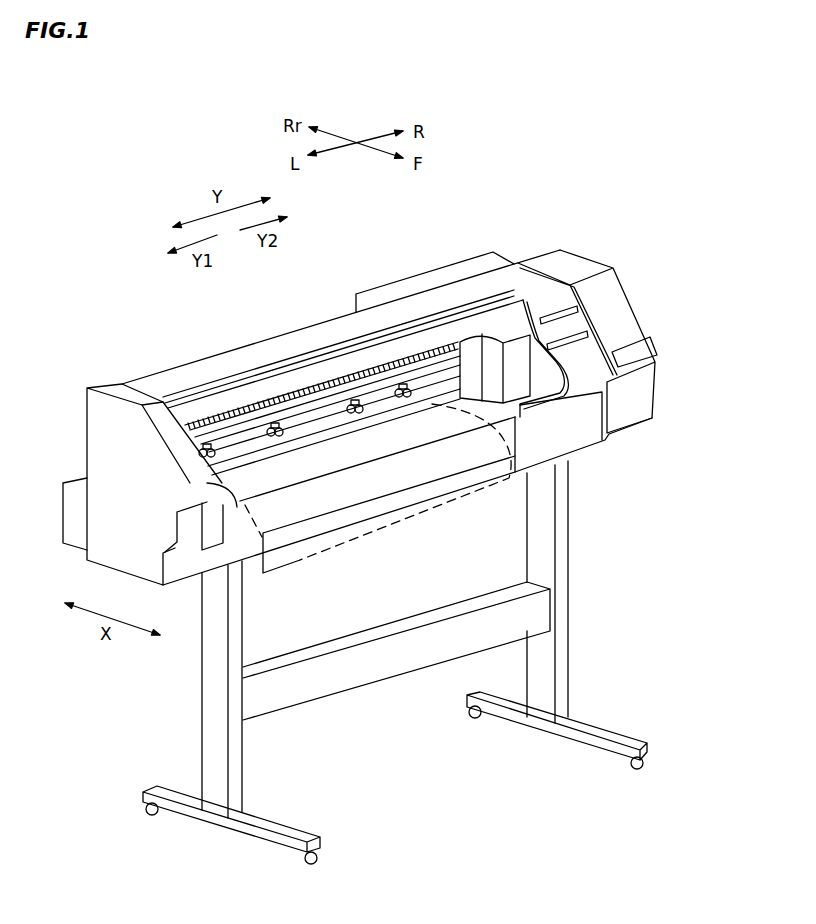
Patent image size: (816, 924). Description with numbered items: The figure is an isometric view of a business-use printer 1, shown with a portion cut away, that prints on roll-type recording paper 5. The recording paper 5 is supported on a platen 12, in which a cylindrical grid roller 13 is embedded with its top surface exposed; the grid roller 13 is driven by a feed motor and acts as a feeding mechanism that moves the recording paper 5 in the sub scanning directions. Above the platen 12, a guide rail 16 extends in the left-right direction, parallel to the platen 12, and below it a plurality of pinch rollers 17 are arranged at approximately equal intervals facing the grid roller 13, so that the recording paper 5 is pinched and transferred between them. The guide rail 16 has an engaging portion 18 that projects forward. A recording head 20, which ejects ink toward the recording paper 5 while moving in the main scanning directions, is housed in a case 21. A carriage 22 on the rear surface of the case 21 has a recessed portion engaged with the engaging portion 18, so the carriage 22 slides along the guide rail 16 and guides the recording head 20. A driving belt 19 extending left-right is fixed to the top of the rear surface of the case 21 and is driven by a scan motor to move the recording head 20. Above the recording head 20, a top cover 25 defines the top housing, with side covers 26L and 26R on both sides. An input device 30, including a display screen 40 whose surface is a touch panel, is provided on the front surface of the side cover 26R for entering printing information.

The printer 1 is at (120, 238).
The recording paper 5 is at (433, 516).
The platen 12 is at (337, 455).
The grid roller 13 is at (280, 447).
The guide rail 16 is at (283, 410).
The pinch rollers 17 is at (300, 397).
The engaging portion 18 is at (358, 388).
The driving belt 19 is at (233, 400).
The recording head 20 is at (502, 345).
The case 21 is at (487, 338).
The carriage 22 is at (412, 318).
The top cover 25 is at (152, 380).
The side cover 26L is at (110, 390).
The side cover 26R is at (570, 262).
The input device 30 is at (632, 329).
The display screen 40 is at (634, 352).